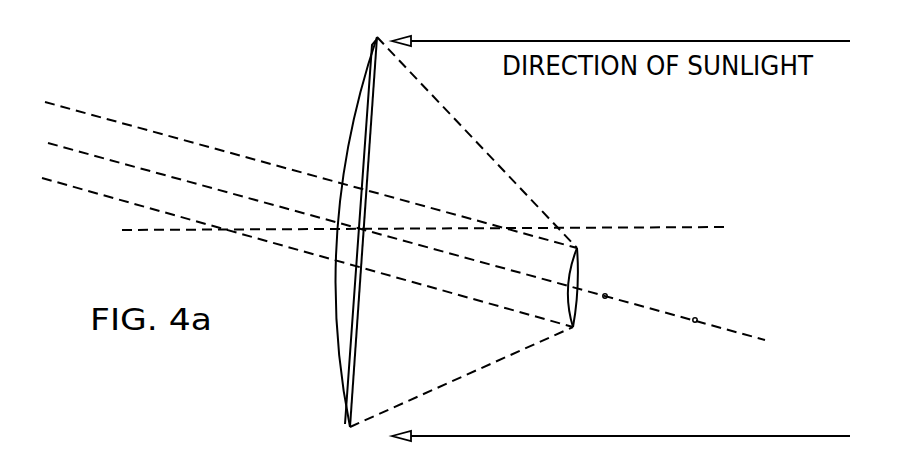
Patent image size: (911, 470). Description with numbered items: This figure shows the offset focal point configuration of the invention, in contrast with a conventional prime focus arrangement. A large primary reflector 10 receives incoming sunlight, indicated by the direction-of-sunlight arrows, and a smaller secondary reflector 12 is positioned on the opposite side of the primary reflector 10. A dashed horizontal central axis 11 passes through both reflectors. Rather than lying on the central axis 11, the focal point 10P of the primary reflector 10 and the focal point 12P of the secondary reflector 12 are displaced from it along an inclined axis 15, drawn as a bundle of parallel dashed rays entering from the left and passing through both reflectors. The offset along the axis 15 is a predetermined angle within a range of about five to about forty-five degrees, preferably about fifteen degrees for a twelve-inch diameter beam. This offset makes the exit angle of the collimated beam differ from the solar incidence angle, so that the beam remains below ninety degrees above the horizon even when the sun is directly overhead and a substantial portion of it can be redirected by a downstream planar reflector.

The primary reflector 10 is at (310, 222).
The central axis 11 is at (436, 212).
The secondary reflector 12 is at (621, 286).
The axis 15 is at (403, 221).
The focal point of primary reflector 10P is at (630, 328).
The focal point of secondary reflector 12P is at (729, 350).